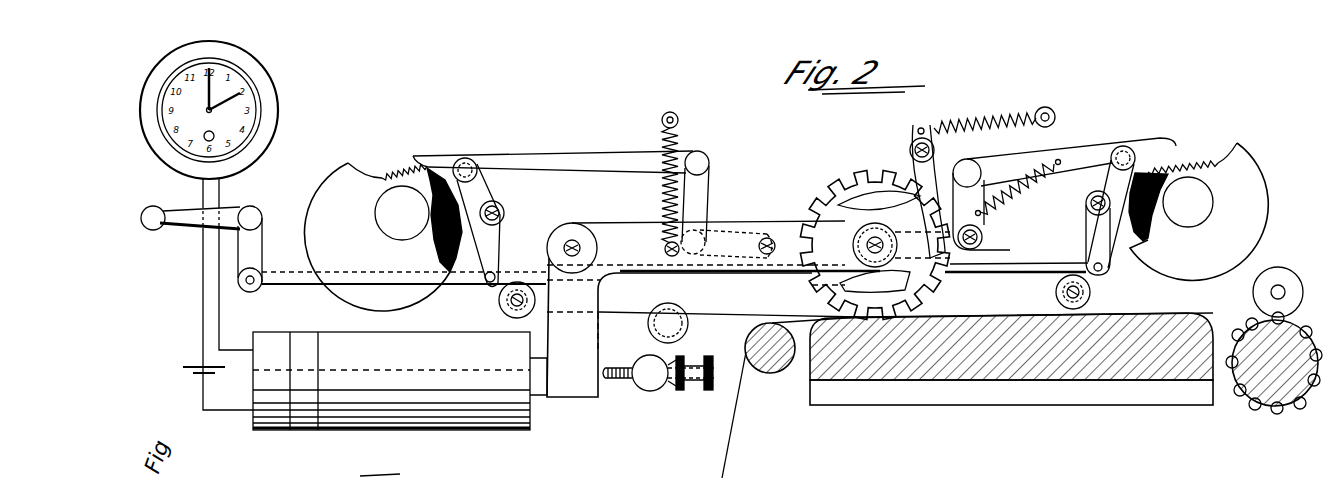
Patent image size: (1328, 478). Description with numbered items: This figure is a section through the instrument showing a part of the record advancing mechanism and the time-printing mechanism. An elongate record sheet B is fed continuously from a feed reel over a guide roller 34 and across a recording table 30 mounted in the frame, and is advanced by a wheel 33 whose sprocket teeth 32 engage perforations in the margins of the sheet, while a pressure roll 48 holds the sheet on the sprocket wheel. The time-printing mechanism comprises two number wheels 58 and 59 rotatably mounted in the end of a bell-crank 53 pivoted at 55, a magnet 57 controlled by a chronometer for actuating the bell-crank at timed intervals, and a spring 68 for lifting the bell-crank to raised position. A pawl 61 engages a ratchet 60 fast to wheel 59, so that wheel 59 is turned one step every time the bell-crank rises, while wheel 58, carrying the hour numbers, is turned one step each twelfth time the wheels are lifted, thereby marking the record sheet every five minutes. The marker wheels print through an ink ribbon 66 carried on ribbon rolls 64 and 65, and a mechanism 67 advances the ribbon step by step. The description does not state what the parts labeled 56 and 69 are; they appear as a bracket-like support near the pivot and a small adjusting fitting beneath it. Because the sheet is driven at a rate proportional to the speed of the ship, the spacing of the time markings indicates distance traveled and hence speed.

The recording table 30 is at (935, 375).
The sprocket teeth 32 is at (1283, 412).
The sprocket wheel 33 is at (1248, 395).
The guide roller 34 is at (778, 372).
The pressure roll 48 is at (1272, 280).
The bell-crank 53 is at (755, 225).
The pivot 55 is at (575, 243).
The bracket 56 is at (563, 397).
The magnet 57 is at (358, 330).
The number wheel 58 is at (838, 200).
The number wheel 59 is at (975, 250).
The ratchet 60 is at (936, 278).
The pawl 61 is at (930, 176).
The ribbon roll 64 is at (1170, 178).
The ribbon roll 65 is at (445, 170).
The ribbon 66 is at (712, 312).
The ribbon advancing mechanism 67 is at (213, 222).
The spring 68 is at (680, 142).
The adjusting bolt 69 is at (622, 380).
The record sheet B is at (1170, 316).